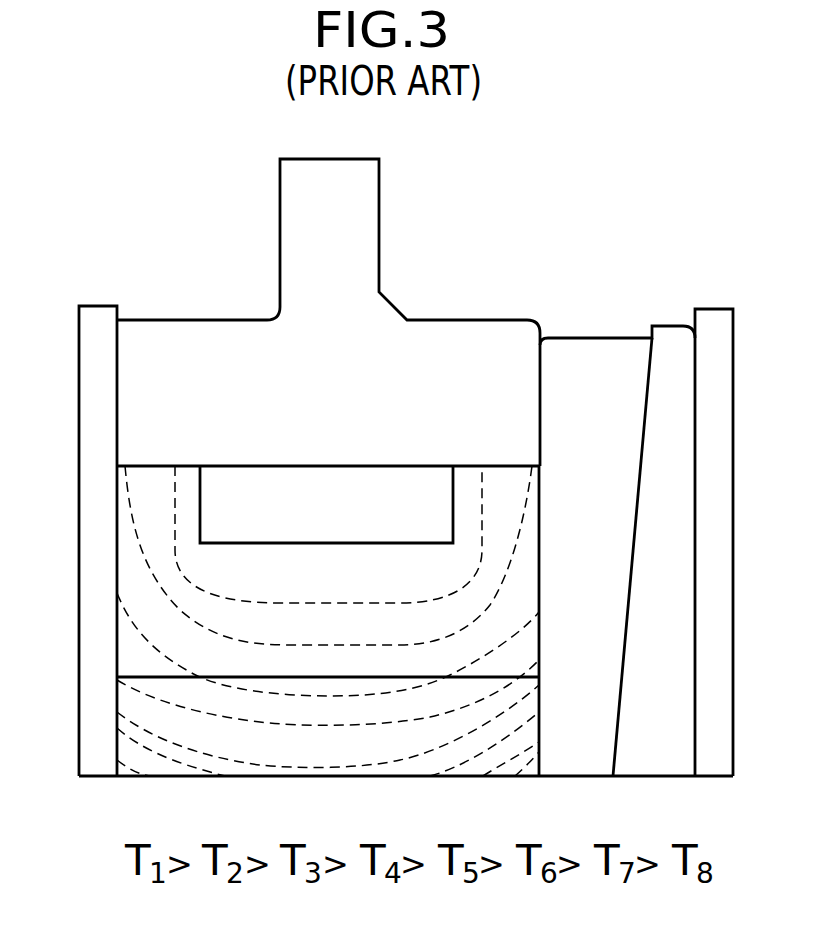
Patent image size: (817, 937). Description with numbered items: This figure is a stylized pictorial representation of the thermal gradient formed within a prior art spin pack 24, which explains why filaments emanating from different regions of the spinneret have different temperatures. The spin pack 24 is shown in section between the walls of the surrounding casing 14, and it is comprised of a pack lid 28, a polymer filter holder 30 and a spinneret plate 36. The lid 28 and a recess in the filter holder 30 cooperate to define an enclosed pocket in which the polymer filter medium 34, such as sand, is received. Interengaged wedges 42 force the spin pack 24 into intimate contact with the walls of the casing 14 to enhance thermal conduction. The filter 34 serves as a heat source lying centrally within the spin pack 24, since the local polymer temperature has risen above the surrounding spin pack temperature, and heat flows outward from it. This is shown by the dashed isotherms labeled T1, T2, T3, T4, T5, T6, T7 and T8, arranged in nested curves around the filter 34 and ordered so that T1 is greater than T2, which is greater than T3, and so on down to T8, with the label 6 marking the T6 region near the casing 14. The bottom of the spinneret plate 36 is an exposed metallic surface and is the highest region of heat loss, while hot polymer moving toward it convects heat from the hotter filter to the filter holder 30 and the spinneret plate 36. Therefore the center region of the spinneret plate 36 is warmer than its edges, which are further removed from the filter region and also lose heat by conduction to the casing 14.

The casing 14 is at (98, 362).
The spin pack 24 is at (328, 312).
The pack lid 28 is at (433, 353).
The polymer filter medium 34 is at (222, 487).
The wedges 42 is at (607, 367).
The polymer filter holder 30 is at (455, 597).
The spinneret plate 36 is at (415, 731).
The temperature zone T6 6 is at (521, 730).
The isotherm T1 is at (282, 600).
The isotherm T2 is at (272, 643).
The isotherm T3 is at (353, 654).
The isotherm T4 is at (526, 660).
The isotherm T5 is at (324, 765).
The isotherm T6 is at (130, 735).
The isotherm T7 is at (502, 761).
The isotherm T8 is at (529, 766).